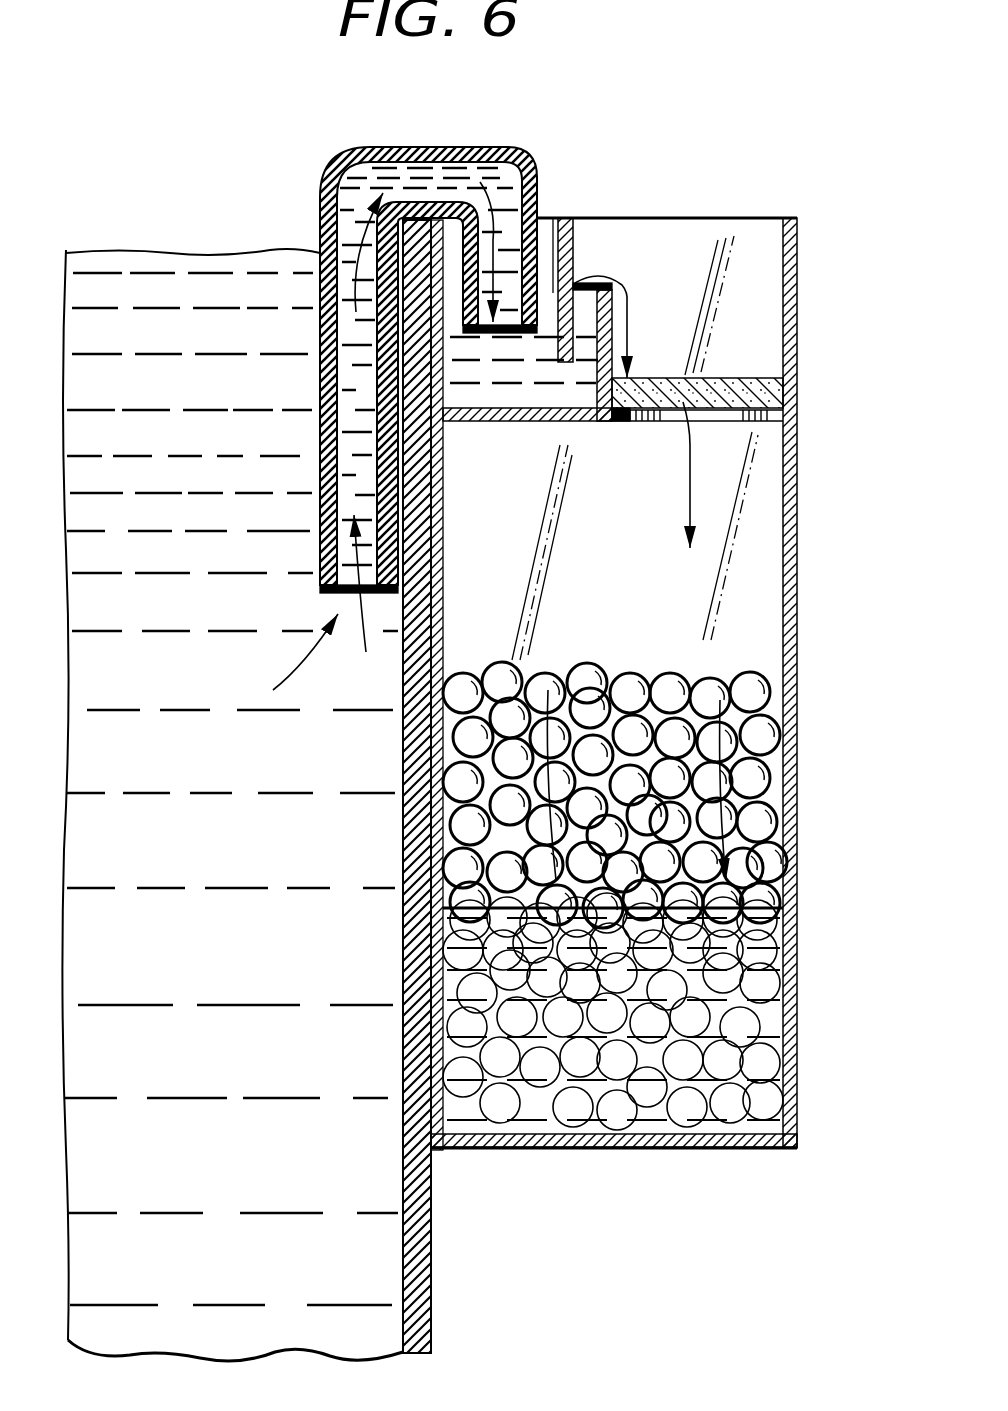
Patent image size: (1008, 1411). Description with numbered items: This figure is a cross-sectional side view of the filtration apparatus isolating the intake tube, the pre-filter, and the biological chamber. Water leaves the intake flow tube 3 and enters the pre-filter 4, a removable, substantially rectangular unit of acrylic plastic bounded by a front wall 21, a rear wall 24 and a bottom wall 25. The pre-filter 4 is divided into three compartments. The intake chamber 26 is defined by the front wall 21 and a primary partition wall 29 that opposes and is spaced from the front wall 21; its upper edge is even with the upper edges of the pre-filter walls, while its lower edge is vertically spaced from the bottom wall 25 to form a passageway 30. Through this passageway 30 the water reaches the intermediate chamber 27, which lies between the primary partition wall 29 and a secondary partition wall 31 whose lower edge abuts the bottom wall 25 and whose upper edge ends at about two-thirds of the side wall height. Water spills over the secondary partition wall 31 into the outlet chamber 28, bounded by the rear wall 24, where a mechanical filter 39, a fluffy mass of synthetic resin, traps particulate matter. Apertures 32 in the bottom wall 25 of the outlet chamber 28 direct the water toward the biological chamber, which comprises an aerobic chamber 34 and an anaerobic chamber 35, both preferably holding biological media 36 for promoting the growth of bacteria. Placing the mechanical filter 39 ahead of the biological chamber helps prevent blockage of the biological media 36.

The intake flow tube 3 is at (502, 160).
The pre-filter 4 is at (670, 237).
The front wall 21 is at (452, 372).
The rear wall 24 is at (797, 364).
The bottom wall 25 is at (627, 410).
The intake chamber 26 is at (553, 217).
The intermediate chamber 27 is at (585, 360).
The outlet chamber 28 is at (733, 257).
The primary partition wall 29 is at (572, 238).
The passageway 30 is at (550, 388).
The secondary partition wall 31 is at (624, 327).
The apertures 32 is at (740, 427).
The aerobic chamber 34 is at (768, 864).
The anaerobic chamber 35 is at (767, 995).
The biological media 36 is at (773, 730).
The mechanical filter 39 is at (772, 398).